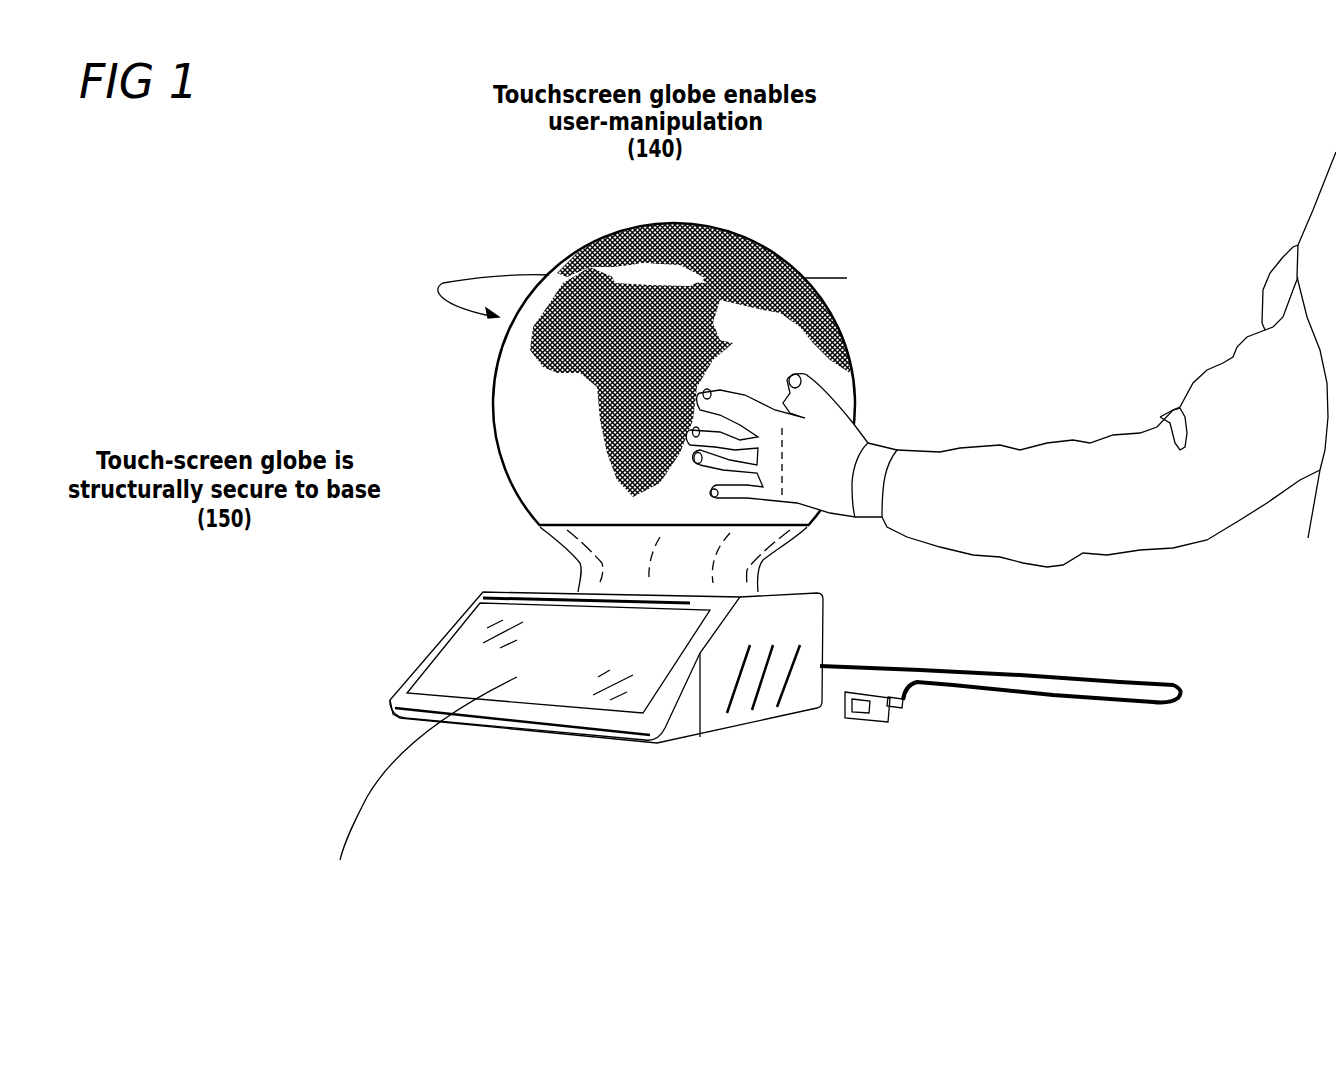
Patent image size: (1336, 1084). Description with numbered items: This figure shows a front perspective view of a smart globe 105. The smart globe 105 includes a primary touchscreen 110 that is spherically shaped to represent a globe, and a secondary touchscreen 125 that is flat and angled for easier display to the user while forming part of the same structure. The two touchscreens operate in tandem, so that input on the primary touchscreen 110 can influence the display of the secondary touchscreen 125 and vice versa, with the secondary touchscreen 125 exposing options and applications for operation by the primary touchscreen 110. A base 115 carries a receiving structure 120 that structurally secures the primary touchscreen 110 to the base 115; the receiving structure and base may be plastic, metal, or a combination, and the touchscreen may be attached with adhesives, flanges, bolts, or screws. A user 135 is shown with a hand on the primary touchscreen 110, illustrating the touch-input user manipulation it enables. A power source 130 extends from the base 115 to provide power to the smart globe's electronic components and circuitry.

The smart globe 105 is at (884, 224).
The primary touchscreen 110 is at (512, 405).
The base 115 is at (393, 703).
The receiving structure 120 is at (547, 542).
The secondary touchscreen 125 is at (645, 675).
The power source 130 is at (1185, 693).
The user 135 is at (1058, 442).